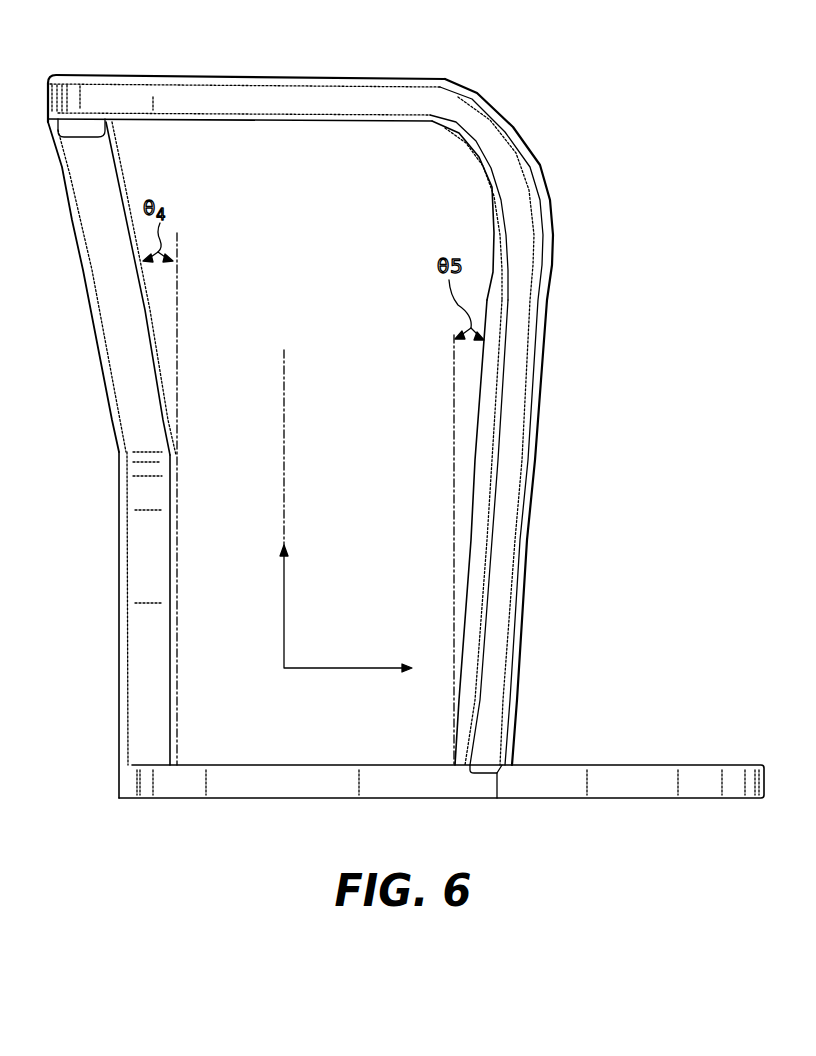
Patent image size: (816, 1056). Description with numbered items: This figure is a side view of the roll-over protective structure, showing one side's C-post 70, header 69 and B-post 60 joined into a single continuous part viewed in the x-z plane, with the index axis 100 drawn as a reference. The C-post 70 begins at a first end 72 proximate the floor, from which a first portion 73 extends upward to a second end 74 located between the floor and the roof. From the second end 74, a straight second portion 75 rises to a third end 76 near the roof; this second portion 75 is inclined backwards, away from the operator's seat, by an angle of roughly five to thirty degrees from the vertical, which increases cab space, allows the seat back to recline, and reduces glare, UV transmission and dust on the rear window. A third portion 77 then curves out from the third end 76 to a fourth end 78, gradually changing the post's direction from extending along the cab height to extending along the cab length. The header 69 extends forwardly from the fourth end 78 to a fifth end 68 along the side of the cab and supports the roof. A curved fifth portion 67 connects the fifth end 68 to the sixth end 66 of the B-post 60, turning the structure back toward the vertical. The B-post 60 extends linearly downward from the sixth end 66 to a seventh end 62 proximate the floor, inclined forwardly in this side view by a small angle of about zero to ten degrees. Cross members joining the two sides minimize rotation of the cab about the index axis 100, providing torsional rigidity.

The B-post 60 is at (517, 537).
The seventh end 62 is at (493, 754).
The sixth end 66 is at (527, 237).
The fifth portion 67 is at (510, 138).
The fifth end 68 is at (443, 100).
The header 69 is at (300, 97).
The C-post 70 is at (160, 348).
The first end 72 is at (128, 776).
The first portion 73 is at (128, 618).
The second end 74 is at (128, 453).
The second portion 75 is at (103, 283).
The third end 76 is at (80, 176).
The third portion 77 is at (108, 97).
The fourth end 78 is at (178, 97).
The index axis 100 is at (285, 362).